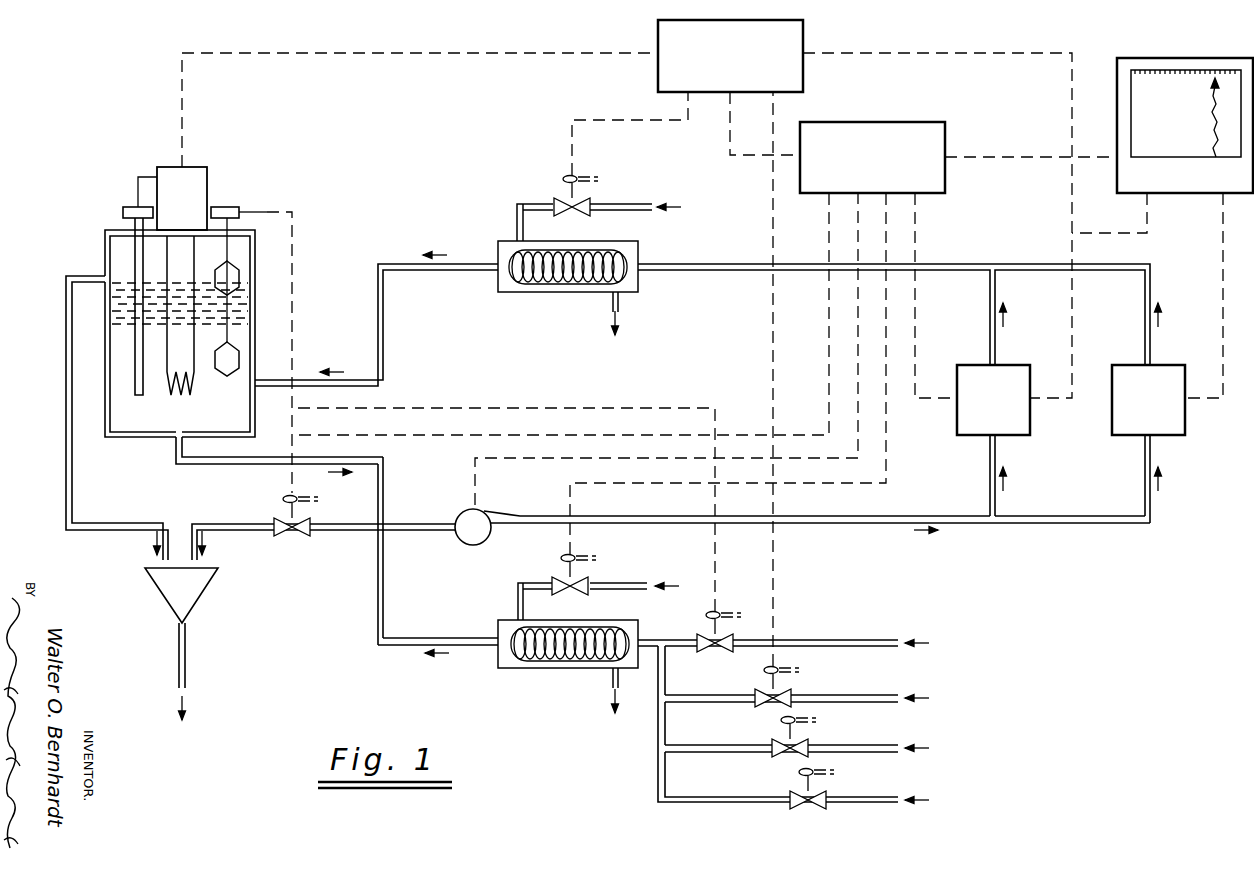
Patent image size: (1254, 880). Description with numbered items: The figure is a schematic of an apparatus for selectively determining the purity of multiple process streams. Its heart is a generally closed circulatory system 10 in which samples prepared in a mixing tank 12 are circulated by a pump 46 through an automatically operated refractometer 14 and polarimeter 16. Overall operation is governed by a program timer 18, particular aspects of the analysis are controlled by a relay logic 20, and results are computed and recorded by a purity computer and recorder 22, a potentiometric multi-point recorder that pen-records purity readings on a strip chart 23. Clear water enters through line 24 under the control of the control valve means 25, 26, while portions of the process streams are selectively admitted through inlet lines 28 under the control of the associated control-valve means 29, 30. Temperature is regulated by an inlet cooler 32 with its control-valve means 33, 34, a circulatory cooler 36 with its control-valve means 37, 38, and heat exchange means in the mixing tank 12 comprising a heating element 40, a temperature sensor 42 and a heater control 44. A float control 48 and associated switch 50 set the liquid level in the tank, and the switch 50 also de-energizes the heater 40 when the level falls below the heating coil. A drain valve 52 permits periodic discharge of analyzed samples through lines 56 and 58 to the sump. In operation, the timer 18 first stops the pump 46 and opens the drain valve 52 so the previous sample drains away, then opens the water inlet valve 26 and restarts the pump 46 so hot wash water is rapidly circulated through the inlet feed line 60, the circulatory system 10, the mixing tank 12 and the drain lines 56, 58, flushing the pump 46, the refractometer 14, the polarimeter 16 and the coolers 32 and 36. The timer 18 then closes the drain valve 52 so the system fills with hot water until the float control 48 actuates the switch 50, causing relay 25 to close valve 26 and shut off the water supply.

The closed circulatory system 10 is at (396, 252).
The mixing tank 12 is at (105, 250).
The refractometer 14 is at (982, 436).
The polarimeter 16 is at (1135, 436).
The program timer 18 is at (915, 128).
The relay logic 20 is at (805, 40).
The purity computer and recorder 22 is at (1117, 115).
The strip chart recording 23 is at (1214, 118).
The water inlet line 24 is at (820, 640).
The relay of water control valve means 25 is at (710, 614).
The water inlet valve 26 is at (700, 637).
The sample inlet lines 28 is at (848, 695).
The sample control-valve relay 29 is at (765, 670).
The sample valve 30 is at (755, 692).
The inlet cooler 32 is at (505, 620).
The inlet cooler control-valve relay 33 is at (563, 559).
The inlet cooler control valve 34 is at (555, 580).
The circulatory cooler 36 is at (505, 241).
The circulatory cooler control-valve relay 37 is at (563, 179).
The circulatory cooler control valve 38 is at (555, 200).
The heating element 40 is at (190, 395).
The temperature sensor 42 is at (143, 395).
The heater control 44 is at (205, 175).
The pump 46 is at (483, 512).
The float control 48 is at (239, 264).
The switch 50 is at (228, 207).
The drain valve 52 is at (296, 540).
The drain line 56 is at (384, 493).
The drain line 58 is at (245, 523).
The inlet feed line 60 is at (378, 612).